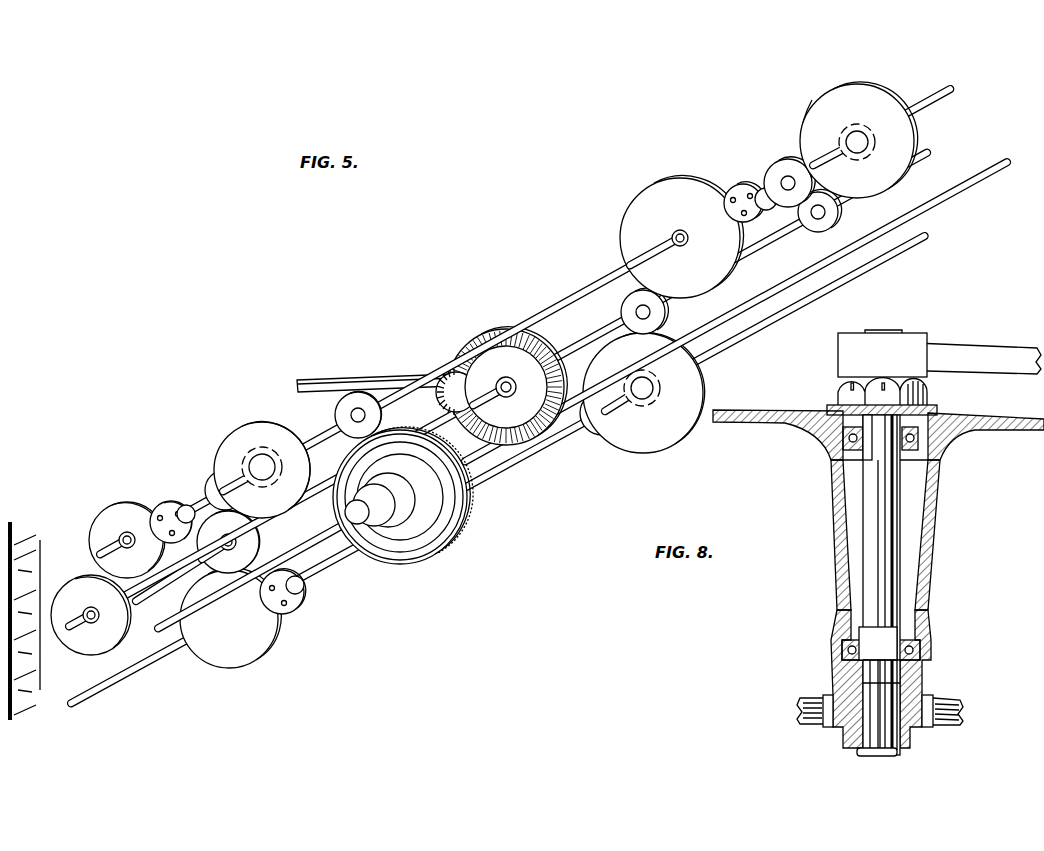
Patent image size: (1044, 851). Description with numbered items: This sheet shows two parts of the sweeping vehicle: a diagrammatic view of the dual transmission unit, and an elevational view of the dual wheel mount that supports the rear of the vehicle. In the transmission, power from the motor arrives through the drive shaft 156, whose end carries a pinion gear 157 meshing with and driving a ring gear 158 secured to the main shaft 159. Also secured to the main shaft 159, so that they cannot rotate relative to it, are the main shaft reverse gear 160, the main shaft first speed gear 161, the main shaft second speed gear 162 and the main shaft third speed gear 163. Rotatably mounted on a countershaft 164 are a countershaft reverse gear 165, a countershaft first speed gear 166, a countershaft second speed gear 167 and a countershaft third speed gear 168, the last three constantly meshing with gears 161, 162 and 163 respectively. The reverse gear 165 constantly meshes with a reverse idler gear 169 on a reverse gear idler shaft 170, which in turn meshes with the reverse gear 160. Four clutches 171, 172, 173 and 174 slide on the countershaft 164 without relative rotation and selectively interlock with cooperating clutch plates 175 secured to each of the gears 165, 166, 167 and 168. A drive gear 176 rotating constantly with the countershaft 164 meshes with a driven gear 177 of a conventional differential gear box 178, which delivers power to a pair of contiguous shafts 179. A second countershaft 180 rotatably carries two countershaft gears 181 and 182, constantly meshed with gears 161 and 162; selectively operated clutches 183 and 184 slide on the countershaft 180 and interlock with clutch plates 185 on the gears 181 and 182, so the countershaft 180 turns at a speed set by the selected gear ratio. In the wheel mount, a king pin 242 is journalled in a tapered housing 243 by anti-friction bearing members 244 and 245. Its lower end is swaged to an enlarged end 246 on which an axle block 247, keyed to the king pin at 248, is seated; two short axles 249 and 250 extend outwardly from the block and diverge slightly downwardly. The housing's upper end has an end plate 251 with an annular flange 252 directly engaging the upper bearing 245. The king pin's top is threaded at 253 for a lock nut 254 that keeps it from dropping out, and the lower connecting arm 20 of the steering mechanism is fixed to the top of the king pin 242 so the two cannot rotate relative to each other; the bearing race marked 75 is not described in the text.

In FIG. 8, the lower connecting arm 20 is at (985, 333).
In FIG. 5, the bearing 75 is at (870, 128).
In FIG. 5, the drive shaft 156 is at (331, 378).
In FIG. 5, the pinion gear 157 is at (455, 374).
In FIG. 5, the ring gear 158 is at (501, 366).
In FIG. 5, the main shaft 159 is at (80, 607).
In FIG. 5, the main shaft reverse gear 160 is at (838, 214).
In FIG. 5, the main shaft first speed gear 161 is at (665, 318).
In FIG. 5, the main shaft second speed gear 162 is at (245, 547).
In FIG. 5, the main shaft third speed gear 163 is at (118, 613).
In FIG. 5, the countershaft 164 is at (103, 547).
In FIG. 5, the countershaft reverse gear 165 is at (880, 95).
In FIG. 5, the countershaft first speed gear 166 is at (700, 185).
In FIG. 5, the countershaft second speed gear 167 is at (270, 427).
In FIG. 5, the countershaft third speed gear 168 is at (120, 508).
In FIG. 5, the reverse idler gear 169 is at (783, 158).
In FIG. 5, the reverse gear idler shaft 170 is at (768, 210).
In FIG. 5, the clutch 171 is at (818, 148).
In FIG. 5, the clutch 172 is at (744, 184).
In FIG. 5, the clutch 173 is at (218, 480).
In FIG. 5, the clutch 174 is at (172, 503).
In FIG. 5, the clutch plates 175 is at (284, 447).
In FIG. 5, the drive gear 176 is at (365, 405).
In FIG. 5, the driven gear 177 is at (462, 527).
In FIG. 5, the differential gear box 178 is at (430, 530).
In FIG. 5, the contiguous shafts 179 is at (180, 625).
In FIG. 5, the second countershaft 180 is at (135, 680).
In FIG. 5, the countershaft gear 181 is at (660, 440).
In FIG. 5, the countershaft gear 182 is at (245, 648).
In FIG. 5, the clutch 183 is at (602, 438).
In FIG. 5, the clutch 184 is at (302, 599).
In FIG. 5, the clutch plates 185 is at (700, 380).
In FIG. 8, the king pin 242 is at (888, 552).
In FIG. 8, the tapered housing 243 is at (925, 570).
In FIG. 8, the anti-friction bearing member 244 is at (920, 643).
In FIG. 8, the anti-friction bearing member 245 is at (918, 440).
In FIG. 8, the enlarged end 246 is at (892, 755).
In FIG. 8, the axle block 247 is at (905, 688).
In FIG. 8, the key 248 is at (880, 680).
In FIG. 8, the short axle 249 is at (945, 708).
In FIG. 8, the short axle 250 is at (808, 708).
In FIG. 8, the end plate 251 is at (828, 406).
In FIG. 8, the annular flange 252 is at (815, 440).
In FIG. 8, the threaded portion 253 is at (866, 460).
In FIG. 8, the lock nut 254 is at (840, 390).